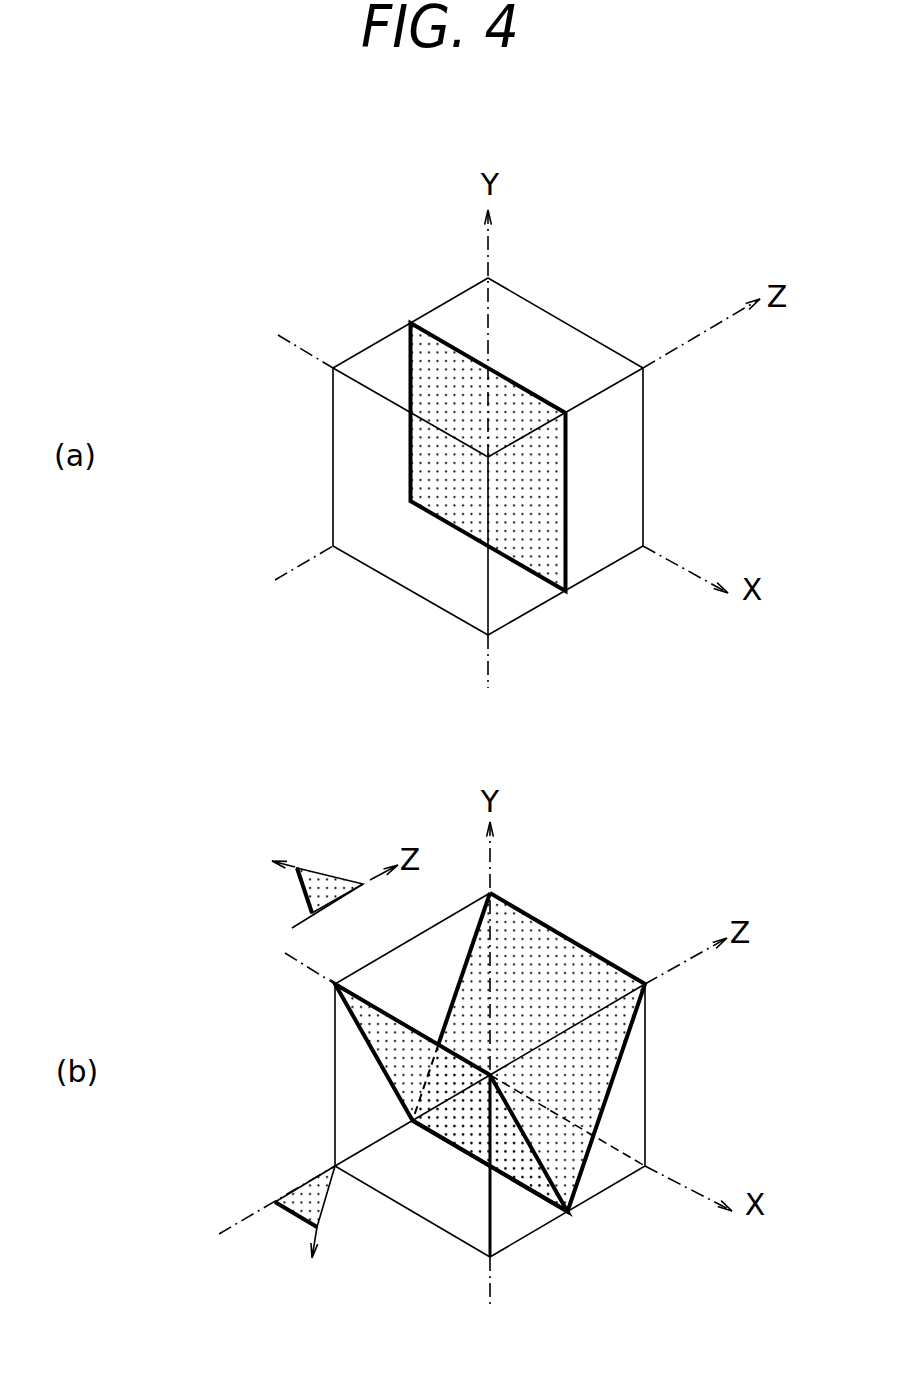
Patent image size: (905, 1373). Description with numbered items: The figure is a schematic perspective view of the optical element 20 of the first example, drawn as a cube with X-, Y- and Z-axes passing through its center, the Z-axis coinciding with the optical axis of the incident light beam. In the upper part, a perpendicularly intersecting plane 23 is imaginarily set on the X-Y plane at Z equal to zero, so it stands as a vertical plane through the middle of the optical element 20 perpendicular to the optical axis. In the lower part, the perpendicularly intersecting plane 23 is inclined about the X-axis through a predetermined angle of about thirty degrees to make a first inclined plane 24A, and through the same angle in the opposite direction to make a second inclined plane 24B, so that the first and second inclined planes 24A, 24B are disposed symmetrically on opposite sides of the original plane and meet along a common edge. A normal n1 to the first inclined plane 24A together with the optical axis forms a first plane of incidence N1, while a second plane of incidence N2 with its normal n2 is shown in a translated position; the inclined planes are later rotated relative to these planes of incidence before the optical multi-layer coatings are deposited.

The optical element 20 is at (577, 328).
The perpendicularly intersecting plane 23 is at (542, 567).
The first inclined plane 24A is at (613, 1085).
The second inclined plane 24B is at (383, 1062).
The first plane of incidence N1 is at (297, 1217).
The second plane of incidence N2 is at (303, 891).
The normal to the first inclined plane n1 is at (313, 1260).
The normal to the second inclined plane n2 is at (264, 855).